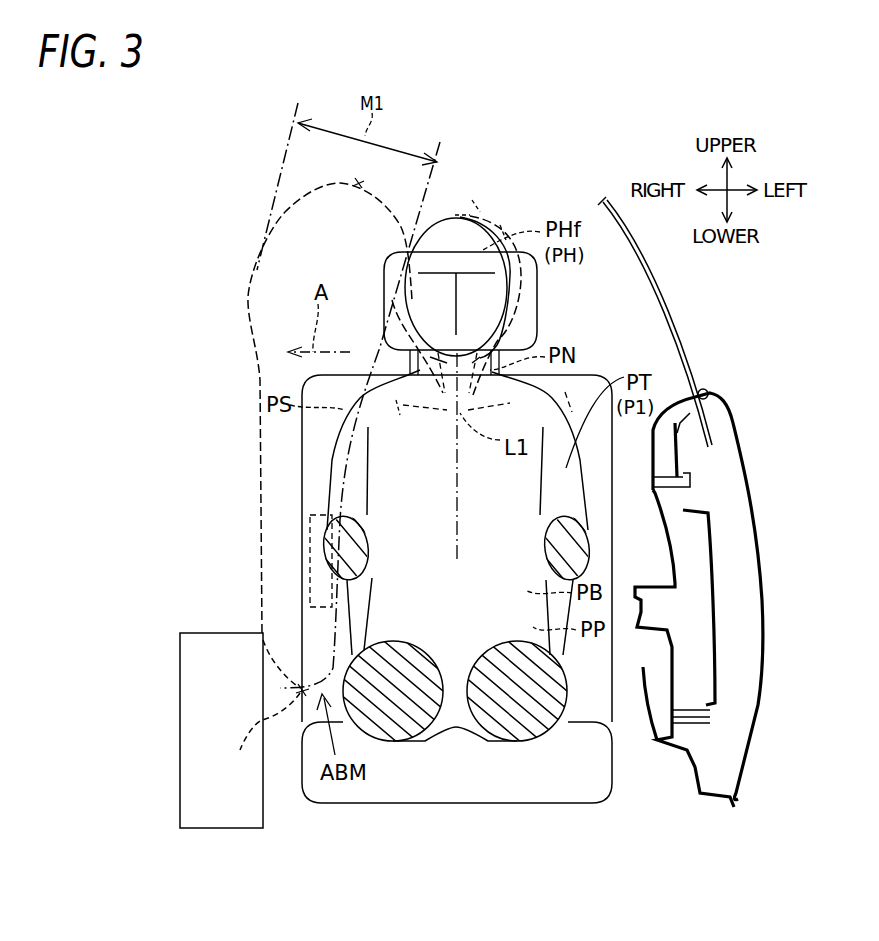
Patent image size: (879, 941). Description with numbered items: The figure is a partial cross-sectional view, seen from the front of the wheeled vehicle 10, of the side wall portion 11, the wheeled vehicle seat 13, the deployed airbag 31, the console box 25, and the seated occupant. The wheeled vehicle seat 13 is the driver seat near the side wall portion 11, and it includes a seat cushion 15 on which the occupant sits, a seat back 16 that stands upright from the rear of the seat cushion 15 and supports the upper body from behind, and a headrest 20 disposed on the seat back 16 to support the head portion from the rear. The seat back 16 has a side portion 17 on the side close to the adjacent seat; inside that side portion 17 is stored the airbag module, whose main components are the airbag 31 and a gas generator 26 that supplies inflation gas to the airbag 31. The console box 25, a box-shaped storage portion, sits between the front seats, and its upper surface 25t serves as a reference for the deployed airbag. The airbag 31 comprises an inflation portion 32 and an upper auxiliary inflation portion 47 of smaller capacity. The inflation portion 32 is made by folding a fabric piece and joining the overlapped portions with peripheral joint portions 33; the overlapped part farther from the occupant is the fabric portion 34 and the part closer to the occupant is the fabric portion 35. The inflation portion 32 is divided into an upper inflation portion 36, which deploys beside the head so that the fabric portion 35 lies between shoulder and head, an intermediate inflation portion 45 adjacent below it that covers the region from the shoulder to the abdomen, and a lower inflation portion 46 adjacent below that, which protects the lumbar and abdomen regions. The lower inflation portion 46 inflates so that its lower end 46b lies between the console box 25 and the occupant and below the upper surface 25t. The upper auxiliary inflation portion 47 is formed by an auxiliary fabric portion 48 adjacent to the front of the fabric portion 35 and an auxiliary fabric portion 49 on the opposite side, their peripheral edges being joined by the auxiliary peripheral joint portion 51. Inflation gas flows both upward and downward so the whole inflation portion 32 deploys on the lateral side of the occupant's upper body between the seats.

The wheeled vehicle 10 is at (688, 300).
The side wall portion 11 is at (737, 444).
The wheeled vehicle seat 13 is at (632, 806).
The seat cushion 15 is at (600, 771).
The seat back 16 is at (598, 537).
The side portion 17 is at (302, 456).
The headrest 20 is at (528, 326).
The console box 25 is at (263, 816).
The upper surface 25t is at (237, 630).
The gas generator 26 is at (333, 598).
The airbag 31 is at (246, 246).
The inflation portion 32 is at (236, 510).
The peripheral joint portions 33 is at (357, 183).
The fabric portion 34 is at (213, 510).
The fabric portion 35 is at (347, 459).
The upper inflation portion 36 is at (257, 267).
The intermediate inflation portion 45 is at (260, 438).
The lower inflation portion 46 is at (263, 668).
The lower end 46b is at (240, 742).
The upper auxiliary inflation portion 47 is at (505, 236).
The auxiliary fabric portion 48 is at (460, 212).
The auxiliary fabric portion 49 is at (544, 201).
The auxiliary peripheral joint portion 51 is at (480, 210).